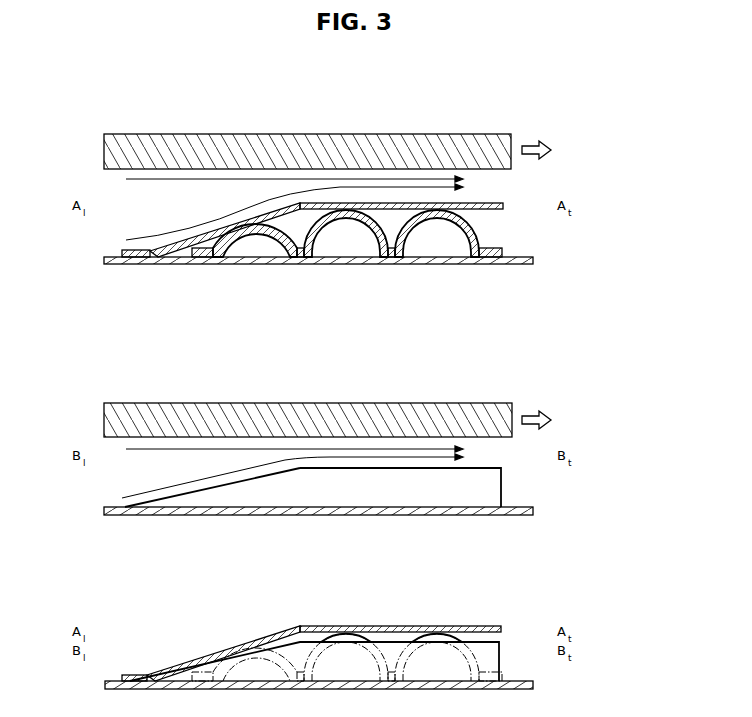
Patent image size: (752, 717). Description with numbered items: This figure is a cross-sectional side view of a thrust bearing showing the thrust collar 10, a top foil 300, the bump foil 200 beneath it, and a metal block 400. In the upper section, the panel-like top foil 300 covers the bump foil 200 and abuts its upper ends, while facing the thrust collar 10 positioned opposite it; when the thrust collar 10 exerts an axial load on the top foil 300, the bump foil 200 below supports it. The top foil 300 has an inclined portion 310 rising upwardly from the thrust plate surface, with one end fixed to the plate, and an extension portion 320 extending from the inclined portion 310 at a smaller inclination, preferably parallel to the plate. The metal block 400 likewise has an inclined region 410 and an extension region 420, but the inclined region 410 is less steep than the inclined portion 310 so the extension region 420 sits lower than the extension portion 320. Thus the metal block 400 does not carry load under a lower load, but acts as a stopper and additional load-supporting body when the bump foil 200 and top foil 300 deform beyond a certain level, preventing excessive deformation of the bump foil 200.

The thrust collar 10 is at (405, 136).
The bump foil 200 is at (477, 239).
The top foil 300 is at (372, 188).
The inclined portion 310 is at (218, 232).
The extension portion 320 is at (350, 203).
The metal block 400 is at (365, 514).
The inclined region 410 is at (231, 496).
The extension region 420 is at (393, 488).